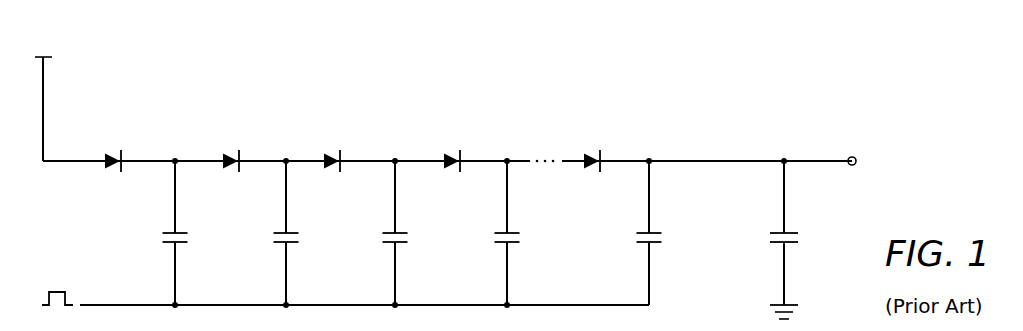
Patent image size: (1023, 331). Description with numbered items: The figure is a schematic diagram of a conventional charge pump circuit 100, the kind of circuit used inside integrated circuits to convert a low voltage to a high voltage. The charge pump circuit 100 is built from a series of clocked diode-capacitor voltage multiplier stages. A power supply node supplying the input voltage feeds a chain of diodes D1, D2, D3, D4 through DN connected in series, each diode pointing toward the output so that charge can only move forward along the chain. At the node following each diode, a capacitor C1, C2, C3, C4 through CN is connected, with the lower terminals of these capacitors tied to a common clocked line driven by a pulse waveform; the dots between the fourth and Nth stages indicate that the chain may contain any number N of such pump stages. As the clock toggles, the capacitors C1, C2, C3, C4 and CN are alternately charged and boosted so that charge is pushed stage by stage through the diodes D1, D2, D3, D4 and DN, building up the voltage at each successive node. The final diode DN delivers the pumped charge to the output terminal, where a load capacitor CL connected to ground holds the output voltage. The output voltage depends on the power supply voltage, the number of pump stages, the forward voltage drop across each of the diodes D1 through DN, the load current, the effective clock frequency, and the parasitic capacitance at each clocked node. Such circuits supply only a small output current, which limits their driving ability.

The charge pump circuit 100 is at (383, 96).
The diode D1 is at (110, 150).
The diode D2 is at (228, 150).
The diode D3 is at (328, 150).
The diode D4 is at (449, 150).
The diode DN is at (591, 150).
The capacitor C1 is at (172, 244).
The capacitor C2 is at (282, 244).
The capacitor C3 is at (391, 244).
The capacitor C4 is at (503, 244).
The capacitor CN is at (645, 244).
The load capacitor CL is at (796, 240).